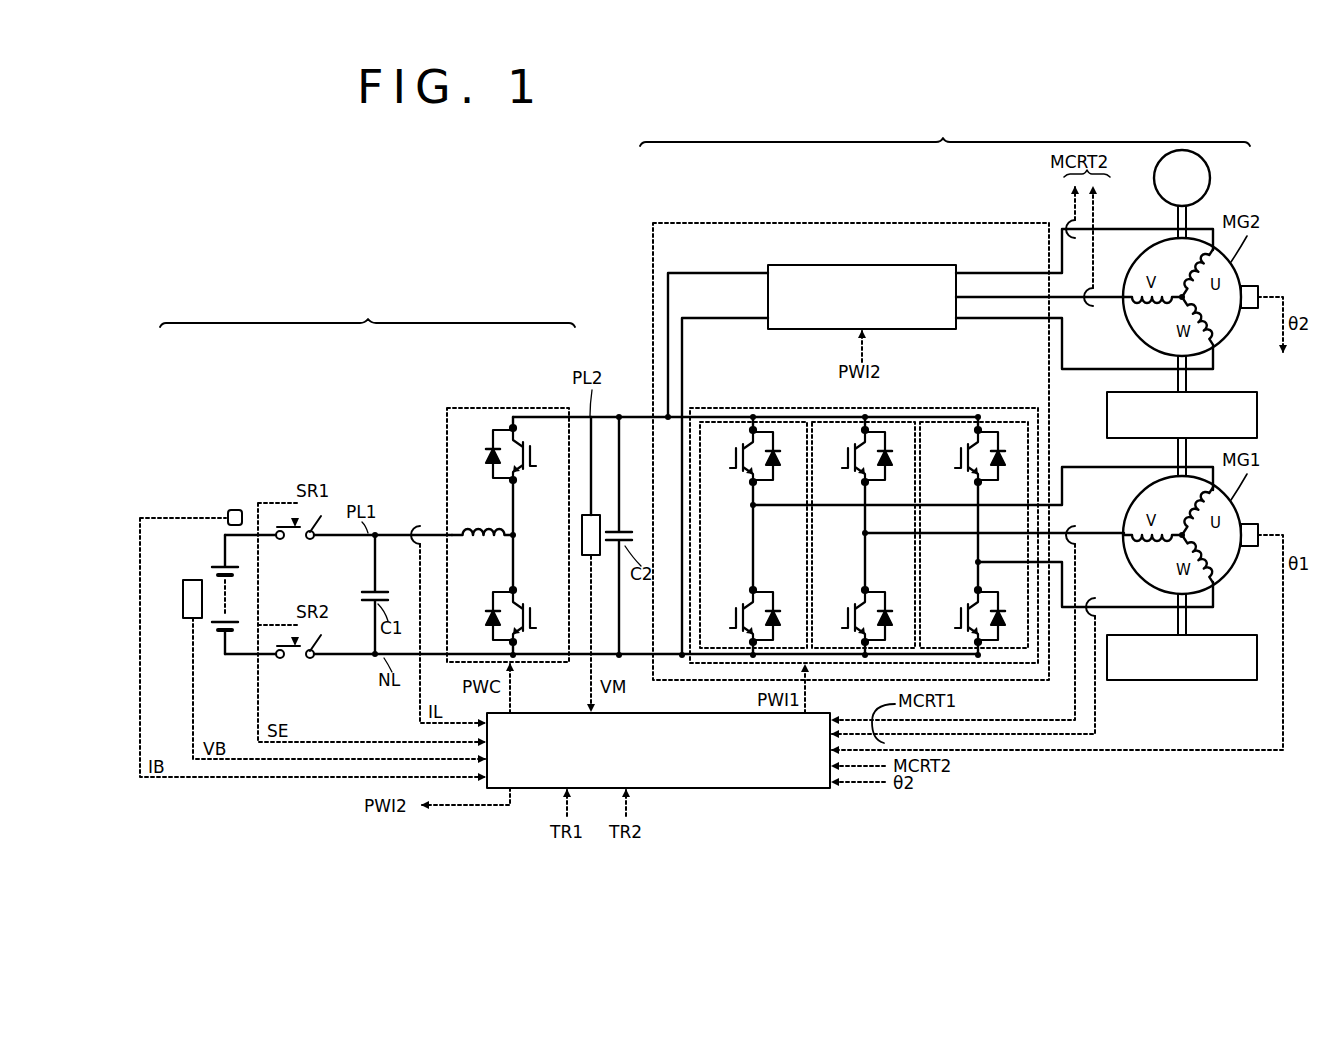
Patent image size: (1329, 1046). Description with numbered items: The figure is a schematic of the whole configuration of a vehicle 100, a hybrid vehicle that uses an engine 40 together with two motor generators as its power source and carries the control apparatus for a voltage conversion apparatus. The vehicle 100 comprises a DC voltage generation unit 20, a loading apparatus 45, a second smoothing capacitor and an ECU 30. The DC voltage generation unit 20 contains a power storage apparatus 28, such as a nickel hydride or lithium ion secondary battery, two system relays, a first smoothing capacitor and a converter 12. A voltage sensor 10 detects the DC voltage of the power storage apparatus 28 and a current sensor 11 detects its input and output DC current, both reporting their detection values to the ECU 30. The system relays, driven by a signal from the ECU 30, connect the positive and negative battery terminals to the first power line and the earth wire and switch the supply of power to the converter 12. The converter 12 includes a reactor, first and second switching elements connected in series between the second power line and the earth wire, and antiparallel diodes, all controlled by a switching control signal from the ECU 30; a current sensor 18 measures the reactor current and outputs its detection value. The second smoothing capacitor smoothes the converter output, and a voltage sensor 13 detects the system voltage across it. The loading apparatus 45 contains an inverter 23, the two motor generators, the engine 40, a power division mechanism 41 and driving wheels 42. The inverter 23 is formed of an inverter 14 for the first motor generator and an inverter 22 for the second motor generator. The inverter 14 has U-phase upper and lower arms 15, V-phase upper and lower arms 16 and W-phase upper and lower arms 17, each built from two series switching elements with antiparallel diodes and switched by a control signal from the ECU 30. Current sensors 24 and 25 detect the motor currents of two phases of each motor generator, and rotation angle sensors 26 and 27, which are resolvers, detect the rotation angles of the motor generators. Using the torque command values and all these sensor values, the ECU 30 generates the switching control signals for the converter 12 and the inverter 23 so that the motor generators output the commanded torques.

The vehicle 100 is at (242, 134).
The voltage sensor 10 is at (190, 581).
The current sensor 11 is at (232, 509).
The converter 12 is at (476, 407).
The voltage sensor 13 is at (589, 513).
The inverter 14 is at (713, 407).
The U-phase upper and lower arms 15 is at (786, 420).
The V-phase upper and lower arms 16 is at (905, 420).
The W-phase upper and lower arms 17 is at (1007, 420).
The current sensor 18 is at (420, 526).
The DC voltage generation unit 20 is at (367, 311).
The inverter 22 is at (922, 265).
The inverter 23 is at (851, 222).
The current sensor 24 is at (1076, 525).
The current sensor 25 is at (1078, 240).
The rotation angle sensor 26 is at (1249, 524).
The rotation angle sensor 27 is at (1249, 284).
The power storage apparatus 28 is at (212, 566).
The ECU 30 is at (805, 789).
The engine 40 is at (1220, 636).
The power division mechanism 41 is at (1220, 393).
The driving wheels 42 is at (1210, 172).
The loading apparatus 45 is at (945, 131).